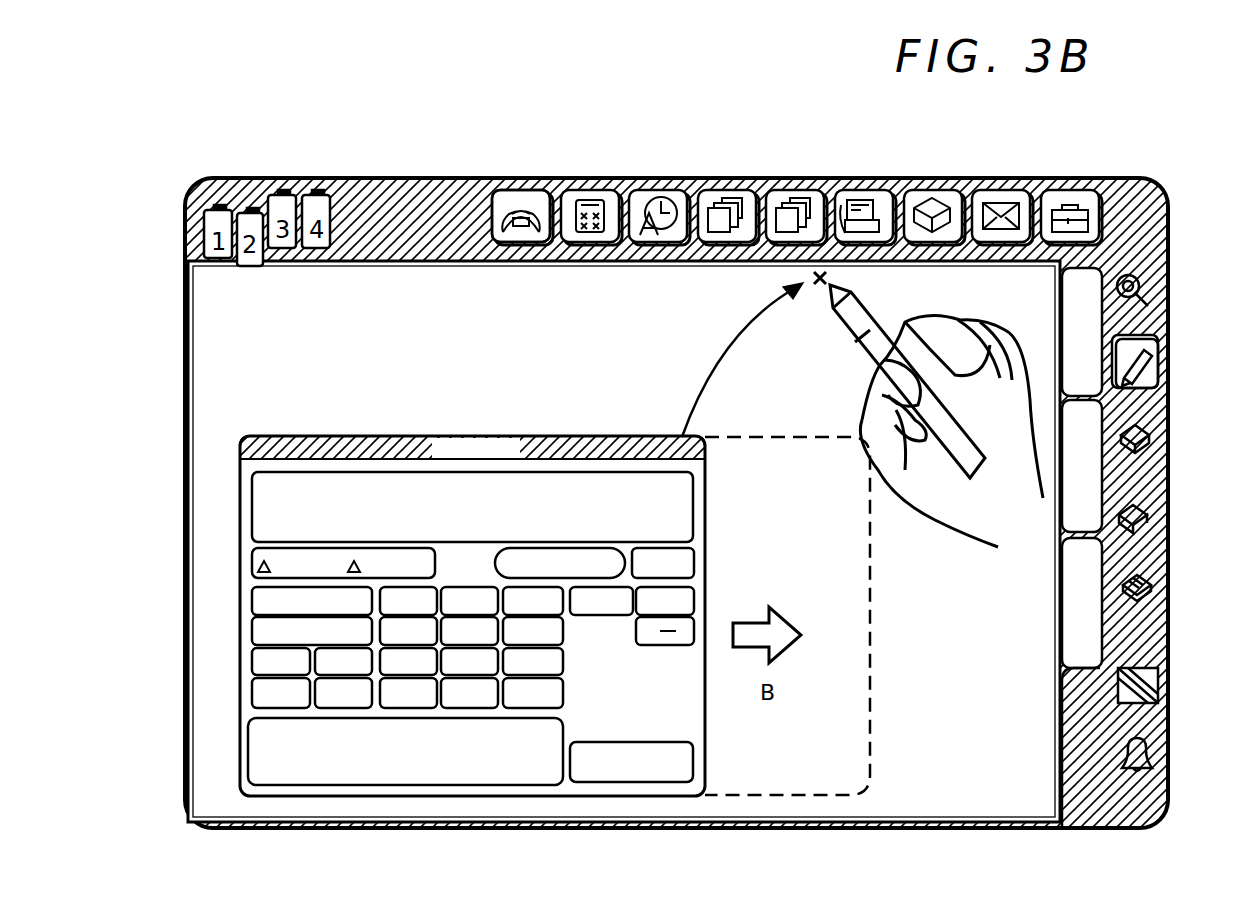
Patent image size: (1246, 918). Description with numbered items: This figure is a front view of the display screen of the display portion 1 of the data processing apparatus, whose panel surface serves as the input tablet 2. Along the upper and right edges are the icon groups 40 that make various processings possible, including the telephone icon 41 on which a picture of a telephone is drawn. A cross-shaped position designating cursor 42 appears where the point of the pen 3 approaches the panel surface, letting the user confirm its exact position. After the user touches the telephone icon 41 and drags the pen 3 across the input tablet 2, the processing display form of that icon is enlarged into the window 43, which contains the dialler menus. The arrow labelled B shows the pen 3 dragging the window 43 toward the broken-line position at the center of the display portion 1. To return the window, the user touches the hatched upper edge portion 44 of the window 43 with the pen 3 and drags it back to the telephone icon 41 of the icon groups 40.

The display portion 1 is at (676, 528).
The input tablet 2 is at (903, 805).
The pen 3 is at (960, 465).
The icon groups 40 is at (493, 170).
The telephone icon 41 is at (497, 190).
The position designating cursor 42 is at (818, 290).
The window 43 is at (356, 785).
The hatched upper edge portion 44 is at (375, 436).